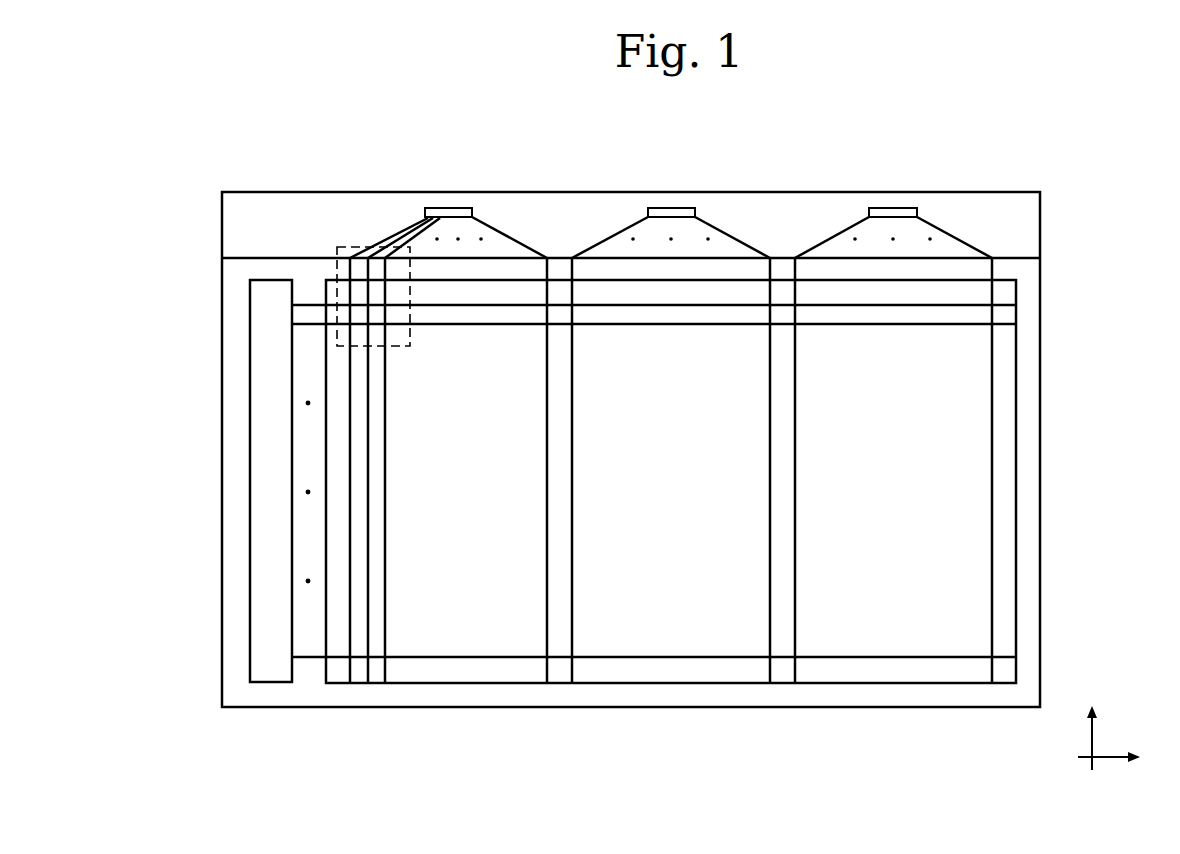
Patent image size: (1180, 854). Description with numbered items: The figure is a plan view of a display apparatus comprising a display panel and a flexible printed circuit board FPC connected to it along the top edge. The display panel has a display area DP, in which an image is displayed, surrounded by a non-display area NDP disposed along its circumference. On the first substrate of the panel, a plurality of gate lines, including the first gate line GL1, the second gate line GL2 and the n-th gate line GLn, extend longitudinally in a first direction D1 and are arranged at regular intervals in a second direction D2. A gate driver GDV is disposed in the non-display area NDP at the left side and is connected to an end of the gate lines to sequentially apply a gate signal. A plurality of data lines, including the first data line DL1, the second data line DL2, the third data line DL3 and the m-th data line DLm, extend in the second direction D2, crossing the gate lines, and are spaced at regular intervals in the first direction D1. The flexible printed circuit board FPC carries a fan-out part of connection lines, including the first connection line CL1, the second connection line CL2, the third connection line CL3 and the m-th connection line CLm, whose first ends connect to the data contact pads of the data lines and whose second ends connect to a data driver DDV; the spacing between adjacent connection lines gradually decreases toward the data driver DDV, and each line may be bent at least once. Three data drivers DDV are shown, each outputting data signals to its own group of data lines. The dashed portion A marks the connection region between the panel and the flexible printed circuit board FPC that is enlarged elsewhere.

The portion A is at (345, 245).
The first connection line CL1 is at (392, 237).
The second connection line CL2 is at (402, 230).
The third connection line CL3 is at (421, 220).
The m-th connection line CLm is at (952, 238).
The data driver DDV is at (451, 212).
The flexible printed circuit board FPC is at (1030, 220).
The display area DP is at (1017, 385).
The non-display area NDP is at (1028, 470).
The gate driver GDV is at (262, 499).
The first gate line GL1 is at (685, 308).
The second gate line GL2 is at (628, 327).
The n-th gate line GLn is at (653, 657).
The first data line DL1 is at (351, 548).
The second data line DL2 is at (368, 509).
The third data line DL3 is at (387, 469).
The m-th data line DLm is at (992, 471).
The first direction D1 is at (1125, 758).
The second direction D2 is at (1092, 726).